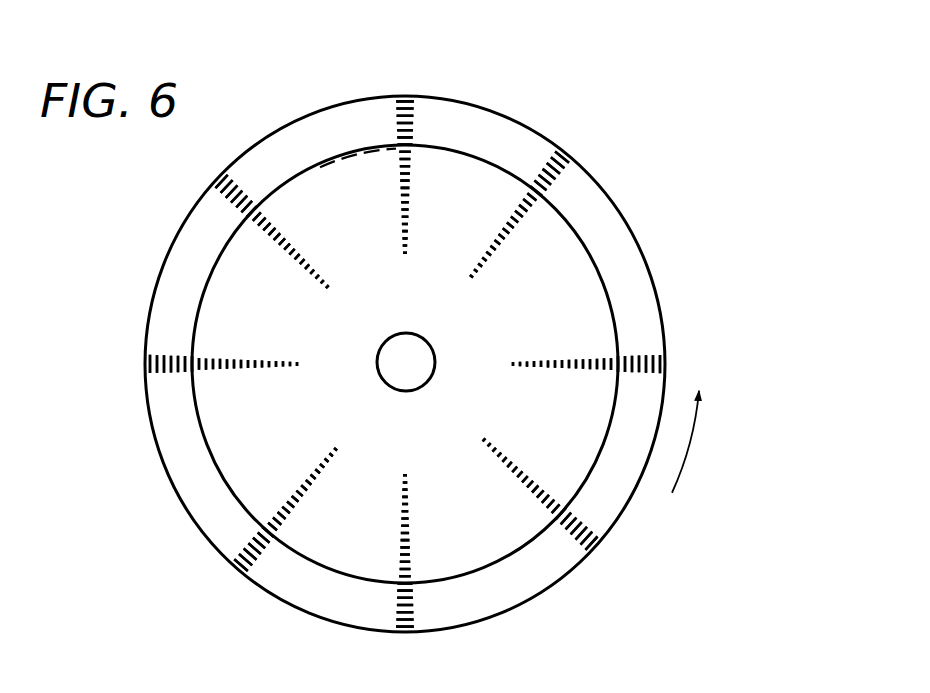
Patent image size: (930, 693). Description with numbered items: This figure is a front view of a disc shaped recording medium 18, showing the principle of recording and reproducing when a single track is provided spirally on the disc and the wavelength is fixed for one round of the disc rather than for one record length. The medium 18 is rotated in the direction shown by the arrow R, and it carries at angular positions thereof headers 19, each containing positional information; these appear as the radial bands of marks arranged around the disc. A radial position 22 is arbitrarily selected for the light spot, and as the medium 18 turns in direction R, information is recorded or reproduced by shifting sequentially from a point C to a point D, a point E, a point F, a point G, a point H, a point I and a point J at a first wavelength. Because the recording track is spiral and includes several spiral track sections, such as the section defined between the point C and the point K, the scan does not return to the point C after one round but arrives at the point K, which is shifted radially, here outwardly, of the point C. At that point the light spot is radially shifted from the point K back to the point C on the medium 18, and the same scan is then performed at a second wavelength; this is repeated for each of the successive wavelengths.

The disc shaped recording medium 18 is at (656, 280).
The header 19 is at (410, 129).
The radial position 22 is at (585, 242).
The point K is at (391, 135).
The point C is at (391, 155).
The point D is at (535, 194).
The point E is at (614, 348).
The point F is at (563, 508).
The point G is at (416, 575).
The point H is at (281, 533).
The point I is at (197, 378).
The point J is at (247, 221).
The direction of rotation R is at (692, 442).